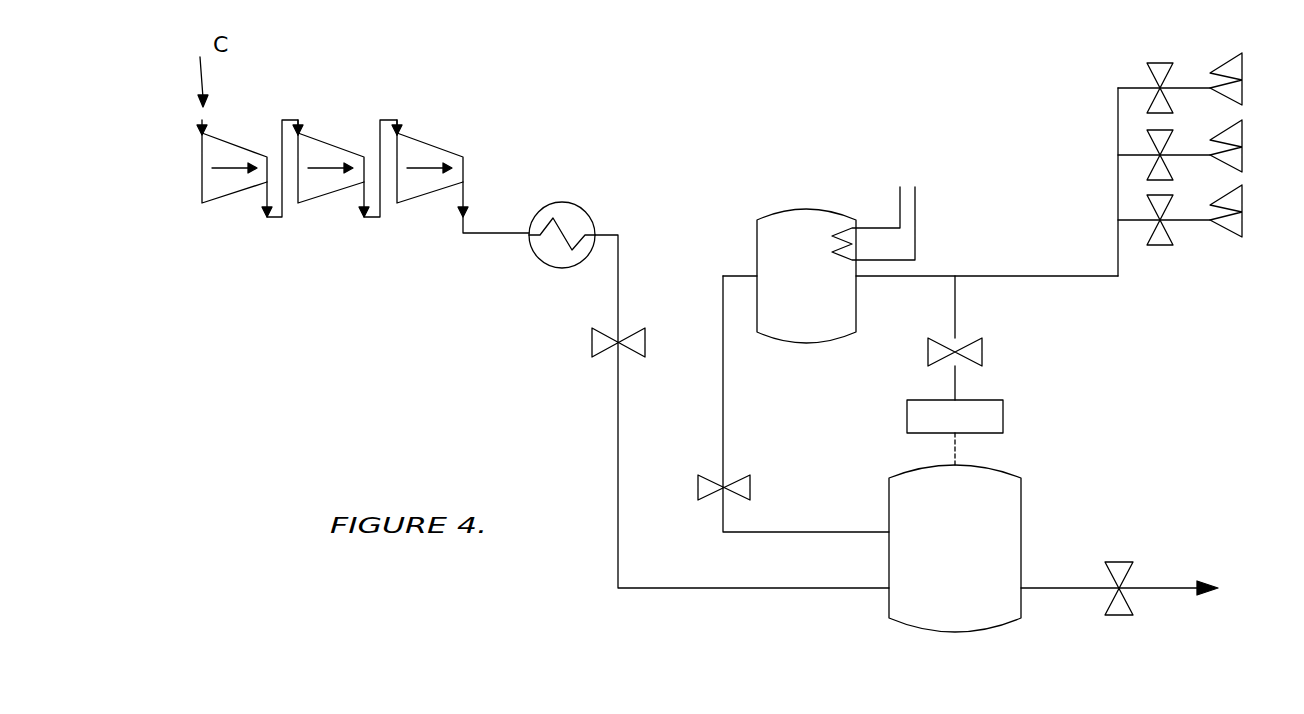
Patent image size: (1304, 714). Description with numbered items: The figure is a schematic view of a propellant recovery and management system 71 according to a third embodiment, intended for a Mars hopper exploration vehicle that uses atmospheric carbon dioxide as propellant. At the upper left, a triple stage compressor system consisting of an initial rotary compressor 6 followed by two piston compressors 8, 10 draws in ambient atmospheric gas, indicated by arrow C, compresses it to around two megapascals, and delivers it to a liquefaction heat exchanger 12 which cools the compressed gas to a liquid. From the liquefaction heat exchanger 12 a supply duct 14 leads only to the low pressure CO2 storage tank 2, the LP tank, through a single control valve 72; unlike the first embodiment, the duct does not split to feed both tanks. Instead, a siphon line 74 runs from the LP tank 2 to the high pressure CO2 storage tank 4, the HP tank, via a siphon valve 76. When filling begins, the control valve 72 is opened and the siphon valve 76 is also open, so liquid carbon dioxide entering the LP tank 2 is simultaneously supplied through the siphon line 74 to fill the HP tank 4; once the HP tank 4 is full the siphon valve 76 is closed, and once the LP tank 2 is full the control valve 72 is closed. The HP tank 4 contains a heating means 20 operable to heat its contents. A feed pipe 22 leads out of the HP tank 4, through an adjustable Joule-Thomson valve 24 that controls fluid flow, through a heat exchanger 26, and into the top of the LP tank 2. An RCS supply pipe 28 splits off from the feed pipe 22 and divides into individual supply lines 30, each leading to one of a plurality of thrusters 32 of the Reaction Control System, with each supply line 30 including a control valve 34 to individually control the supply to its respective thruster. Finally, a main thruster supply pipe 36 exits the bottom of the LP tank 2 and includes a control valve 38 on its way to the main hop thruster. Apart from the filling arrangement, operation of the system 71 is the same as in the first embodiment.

The low pressure CO2 storage tank 2 is at (937, 632).
The high pressure CO2 storage tank 4 is at (806, 210).
The initial rotary compressor 6 is at (224, 204).
The piston compressor 8 is at (320, 204).
The piston compressor 10 is at (418, 204).
The liquefaction heat exchanger 12 is at (572, 205).
The supply duct 14 is at (617, 430).
The heating means 20 is at (918, 222).
The feed pipe 22 is at (887, 278).
The Joule-Thomson valve 24 is at (984, 352).
The heat exchanger 26 is at (1005, 414).
The RCS supply pipe 28 is at (1100, 277).
The supply line 30 is at (1130, 88).
The thruster 32 is at (1242, 80).
The control valve 34 is at (1170, 95).
The main thruster supply pipe 36 is at (1052, 590).
The control valve 38 is at (1120, 617).
The propellant recovery and management system 71 is at (880, 108).
The control valve 72 is at (591, 341).
The siphon line 74 is at (726, 400).
The siphon valve 76 is at (751, 486).